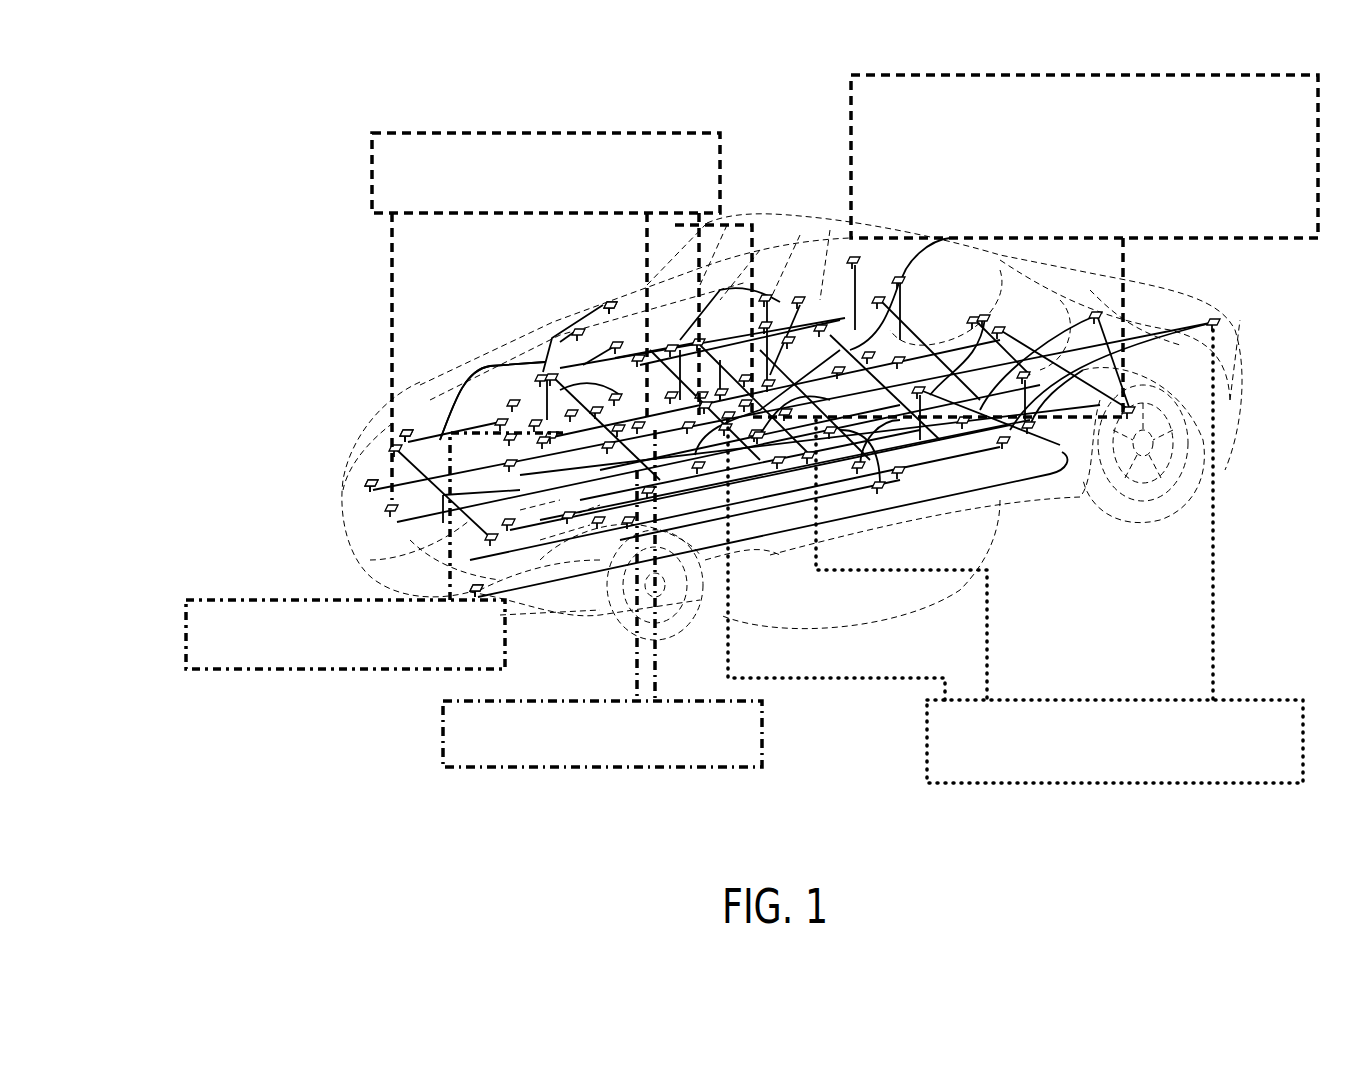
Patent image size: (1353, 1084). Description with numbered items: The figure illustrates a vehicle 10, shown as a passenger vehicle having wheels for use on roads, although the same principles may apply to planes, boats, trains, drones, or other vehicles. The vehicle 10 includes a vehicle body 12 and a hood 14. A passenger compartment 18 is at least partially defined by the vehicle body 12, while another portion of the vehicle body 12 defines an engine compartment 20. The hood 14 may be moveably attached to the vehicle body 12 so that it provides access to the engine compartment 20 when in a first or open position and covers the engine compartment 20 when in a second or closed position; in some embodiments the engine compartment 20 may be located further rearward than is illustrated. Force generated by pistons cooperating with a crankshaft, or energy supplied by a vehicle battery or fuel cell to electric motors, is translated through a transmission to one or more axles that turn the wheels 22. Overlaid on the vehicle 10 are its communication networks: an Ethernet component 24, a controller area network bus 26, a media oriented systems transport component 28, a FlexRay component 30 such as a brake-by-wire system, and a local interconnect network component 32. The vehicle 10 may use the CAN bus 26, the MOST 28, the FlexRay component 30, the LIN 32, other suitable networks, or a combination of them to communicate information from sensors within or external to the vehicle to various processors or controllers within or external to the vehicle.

The vehicle 10 is at (155, 226).
The vehicle body 12 is at (759, 353).
The hood 14 is at (488, 366).
The passenger compartment 18 is at (671, 311).
The engine compartment 20 is at (330, 434).
The wheels 22 is at (614, 596).
The Ethernet component 24 is at (162, 633).
The controller area network (CAN) bus 26 is at (335, 172).
The media oriented systems transport component (MOST) 28 is at (833, 147).
The FlexRay component 30 is at (416, 731).
The local interconnect network component (LIN) 32 is at (908, 731).